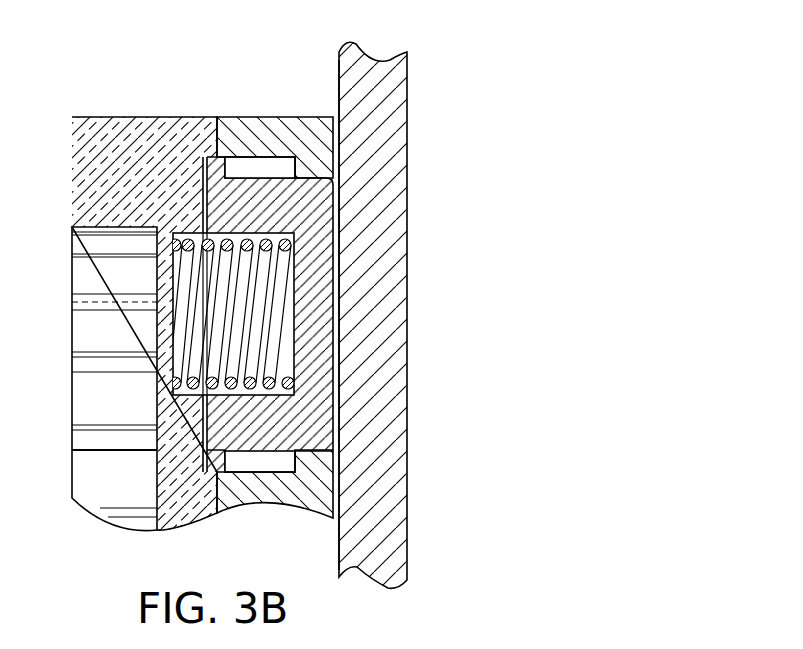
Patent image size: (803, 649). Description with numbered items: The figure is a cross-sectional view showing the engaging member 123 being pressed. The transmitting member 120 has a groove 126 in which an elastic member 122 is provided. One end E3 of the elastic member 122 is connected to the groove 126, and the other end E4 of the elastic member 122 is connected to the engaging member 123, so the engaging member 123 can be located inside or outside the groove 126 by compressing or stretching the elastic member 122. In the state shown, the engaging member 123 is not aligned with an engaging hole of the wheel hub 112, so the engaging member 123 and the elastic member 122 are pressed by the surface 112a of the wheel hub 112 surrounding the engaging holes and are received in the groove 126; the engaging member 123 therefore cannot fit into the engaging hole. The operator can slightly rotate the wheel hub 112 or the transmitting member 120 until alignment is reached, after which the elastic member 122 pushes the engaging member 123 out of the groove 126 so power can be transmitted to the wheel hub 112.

The wheel hub 112 is at (370, 42).
The surface of the wheel hub 112a is at (339, 432).
The transmitting member 120 is at (333, 136).
The elastic member 122 is at (277, 318).
The engaging member 123 is at (325, 233).
The groove 126 is at (258, 170).
The one end of the elastic member E3 is at (179, 264).
The other end of the elastic member E4 is at (288, 270).